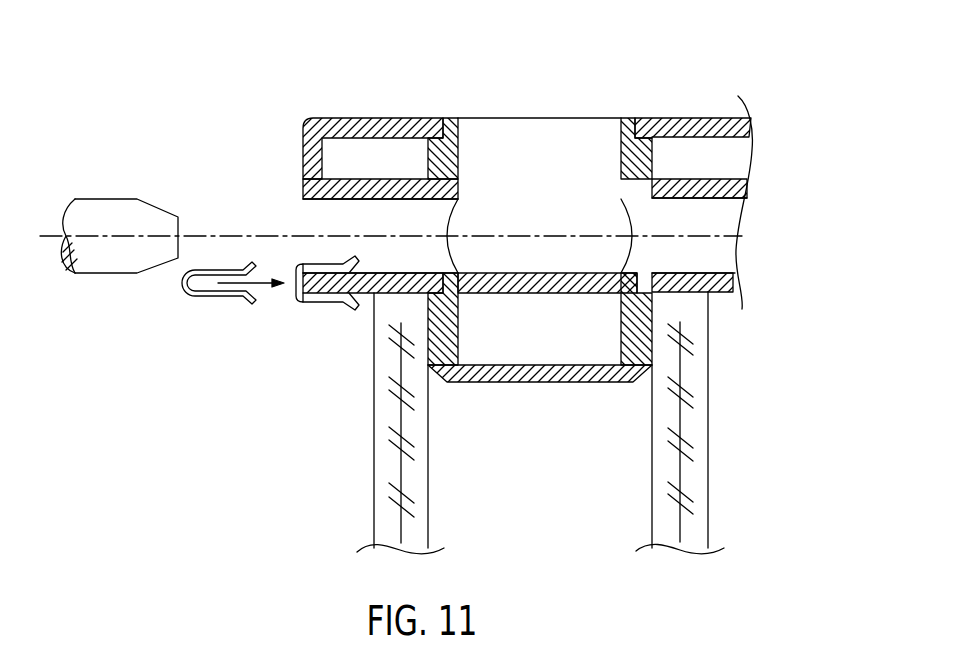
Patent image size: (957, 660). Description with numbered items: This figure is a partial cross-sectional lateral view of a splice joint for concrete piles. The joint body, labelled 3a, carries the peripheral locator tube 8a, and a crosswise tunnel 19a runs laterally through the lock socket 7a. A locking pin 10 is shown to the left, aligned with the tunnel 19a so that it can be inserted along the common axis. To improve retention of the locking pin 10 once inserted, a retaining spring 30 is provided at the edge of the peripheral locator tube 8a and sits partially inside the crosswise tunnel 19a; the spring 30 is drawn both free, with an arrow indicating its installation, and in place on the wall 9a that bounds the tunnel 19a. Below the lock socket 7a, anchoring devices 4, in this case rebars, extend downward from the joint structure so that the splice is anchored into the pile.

The housing 3a is at (390, 118).
The peripheral locator tube 8a is at (303, 190).
The crosswise tunnel 19a is at (727, 218).
The bottom wall 9a is at (722, 295).
The lock socket 7a is at (503, 383).
The anchoring devices 4 is at (710, 480).
The locking pin 10 is at (103, 199).
The retaining spring 30 is at (213, 297).